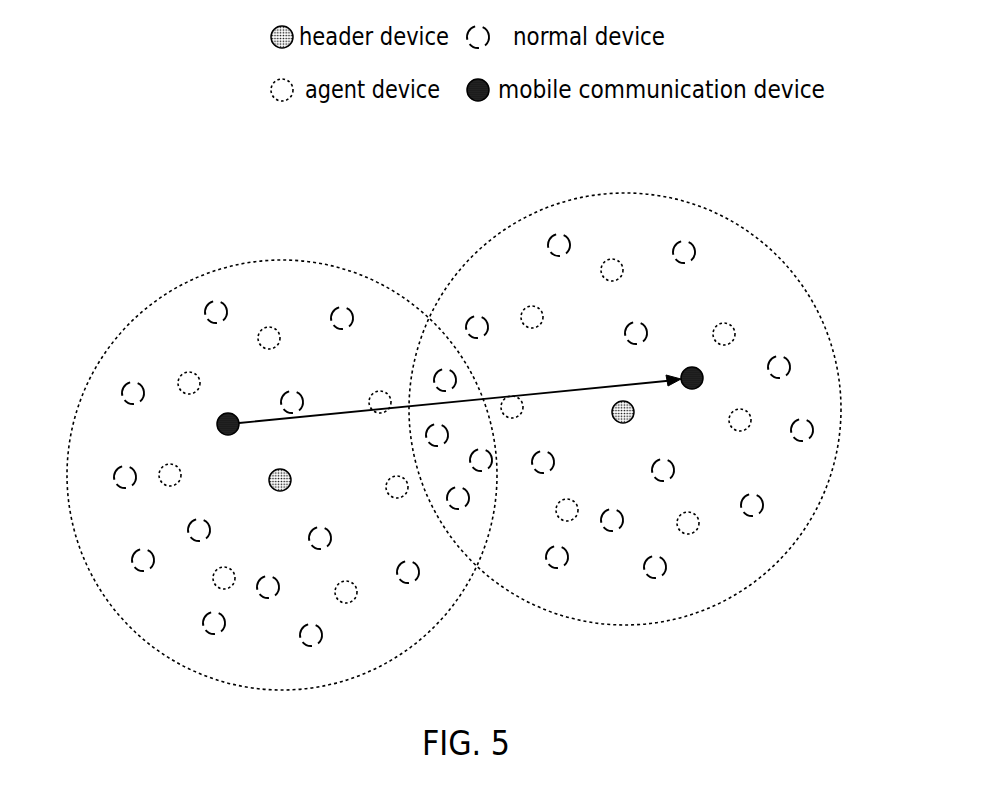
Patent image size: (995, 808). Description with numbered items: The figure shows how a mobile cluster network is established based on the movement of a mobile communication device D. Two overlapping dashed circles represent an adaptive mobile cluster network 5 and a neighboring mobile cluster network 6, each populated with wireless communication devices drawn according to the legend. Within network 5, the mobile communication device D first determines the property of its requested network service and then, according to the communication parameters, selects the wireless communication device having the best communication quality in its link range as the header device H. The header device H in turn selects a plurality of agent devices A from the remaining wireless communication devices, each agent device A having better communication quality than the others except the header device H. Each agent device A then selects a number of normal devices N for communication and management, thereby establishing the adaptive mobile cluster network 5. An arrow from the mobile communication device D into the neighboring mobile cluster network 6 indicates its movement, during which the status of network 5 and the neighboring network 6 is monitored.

The adaptive mobile cluster network 5 is at (290, 235).
The neighboring mobile cluster network 6 is at (747, 204).
The normal device N is at (208, 304).
The agent device A is at (182, 375).
The mobile communication device D is at (218, 424).
The header device H is at (270, 482).